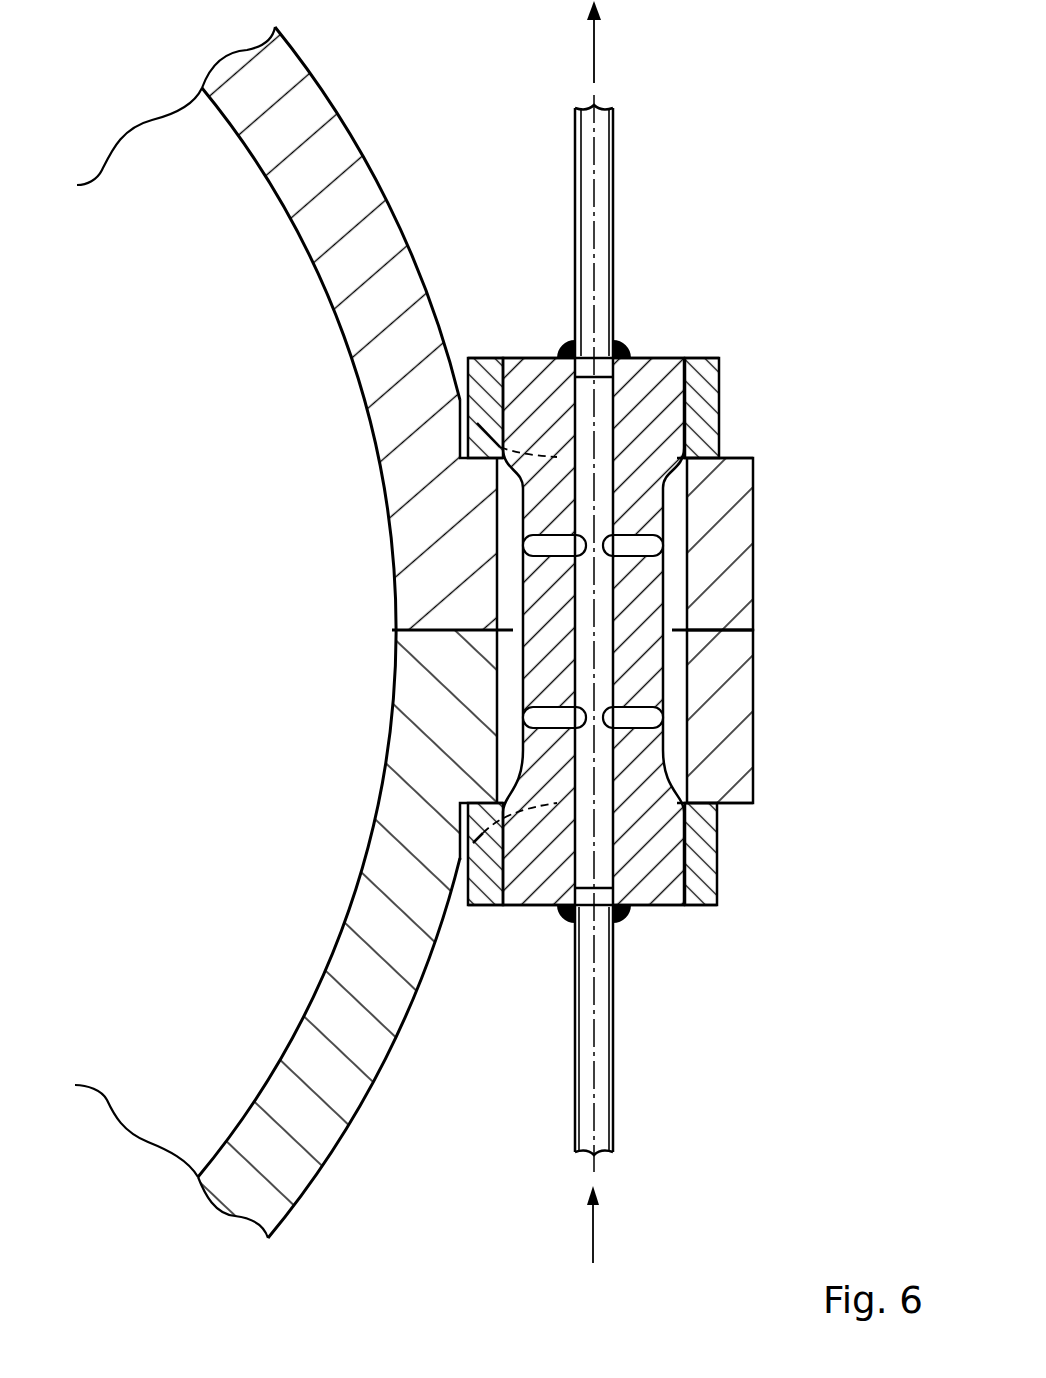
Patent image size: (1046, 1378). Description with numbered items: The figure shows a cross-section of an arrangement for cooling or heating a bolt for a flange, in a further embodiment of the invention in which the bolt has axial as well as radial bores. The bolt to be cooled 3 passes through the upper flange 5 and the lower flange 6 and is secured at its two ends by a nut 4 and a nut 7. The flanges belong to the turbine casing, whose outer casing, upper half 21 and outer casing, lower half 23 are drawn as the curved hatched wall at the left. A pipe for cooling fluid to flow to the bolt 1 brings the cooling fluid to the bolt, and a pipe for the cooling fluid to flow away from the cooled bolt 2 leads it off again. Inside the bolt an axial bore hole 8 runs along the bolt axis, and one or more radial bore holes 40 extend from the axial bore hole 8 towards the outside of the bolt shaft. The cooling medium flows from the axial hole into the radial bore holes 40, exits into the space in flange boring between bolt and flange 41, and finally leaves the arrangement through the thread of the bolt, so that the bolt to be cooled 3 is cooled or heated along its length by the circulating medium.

The pipe for cooling fluid to flow to the bolt 1 is at (600, 1042).
The pipe for the cooling fluid to flow away from the cooled bolt 2 is at (605, 222).
The bolt to be cooled 3 is at (642, 617).
The nut 4 is at (697, 408).
The upper flange 5 is at (717, 562).
The lower flange 6 is at (715, 768).
The nut 7 is at (693, 872).
The axial bore hole in flange bolt 8 is at (602, 642).
The outer casing, upper half 21 is at (362, 258).
The outer casing, lower half 23 is at (360, 1035).
The radial bore holes in flange bolt 40 is at (550, 544).
The space in flange boring between bolt and flange 41 is at (673, 737).